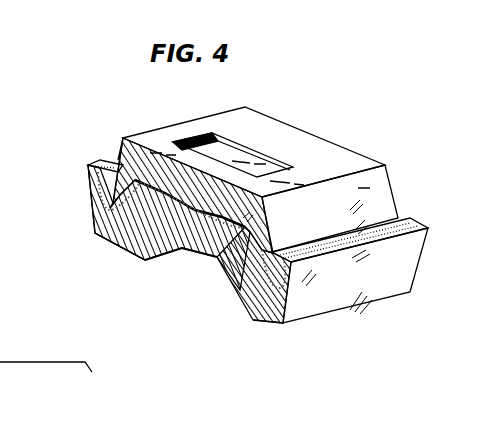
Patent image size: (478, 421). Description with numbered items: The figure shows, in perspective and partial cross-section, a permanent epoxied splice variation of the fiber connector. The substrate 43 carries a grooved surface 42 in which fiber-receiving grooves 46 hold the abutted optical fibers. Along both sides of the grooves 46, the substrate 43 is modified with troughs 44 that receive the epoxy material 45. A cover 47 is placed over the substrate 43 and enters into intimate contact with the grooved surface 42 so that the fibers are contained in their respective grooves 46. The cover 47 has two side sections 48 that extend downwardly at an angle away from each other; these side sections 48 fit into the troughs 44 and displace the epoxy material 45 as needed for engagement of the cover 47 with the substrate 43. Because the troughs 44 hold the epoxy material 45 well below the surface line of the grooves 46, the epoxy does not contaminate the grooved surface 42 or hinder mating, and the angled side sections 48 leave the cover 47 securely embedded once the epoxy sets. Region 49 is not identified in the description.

The grooved surface 42 is at (273, 225).
The substrate 43 is at (333, 287).
The troughs 44 is at (100, 233).
The epoxy material 45 is at (407, 218).
The fiber-receiving grooves 46 is at (192, 246).
The cover 47 is at (312, 155).
The side sections 48 is at (97, 200).
The channel between die portions 49 is at (218, 252).